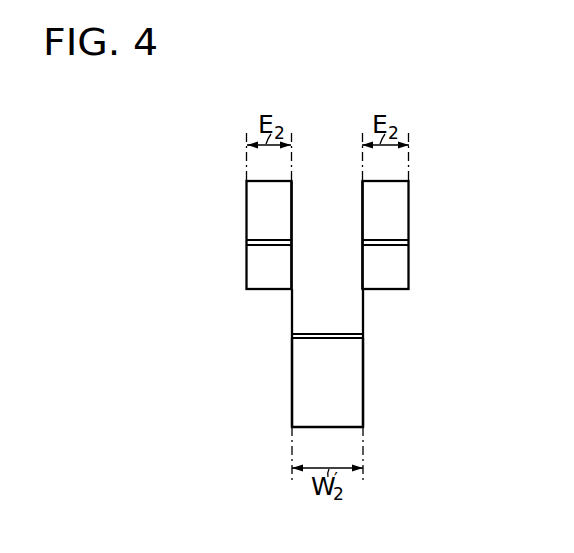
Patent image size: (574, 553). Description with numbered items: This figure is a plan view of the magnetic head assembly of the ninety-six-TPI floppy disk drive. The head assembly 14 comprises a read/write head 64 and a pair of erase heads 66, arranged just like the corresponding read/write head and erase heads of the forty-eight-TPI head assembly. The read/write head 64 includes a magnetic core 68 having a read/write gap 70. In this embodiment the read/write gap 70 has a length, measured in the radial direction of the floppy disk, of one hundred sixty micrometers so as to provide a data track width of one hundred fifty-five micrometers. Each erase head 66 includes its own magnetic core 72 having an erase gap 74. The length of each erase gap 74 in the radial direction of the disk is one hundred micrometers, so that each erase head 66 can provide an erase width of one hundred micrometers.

The head assembly 14 is at (224, 157).
The read/write head 64 is at (372, 387).
The erase heads 66 is at (355, 200).
The magnetic core 68 is at (299, 362).
The read/write gap 70 is at (356, 336).
The magnetic core 72 is at (250, 206).
The erase gap 74 is at (362, 240).